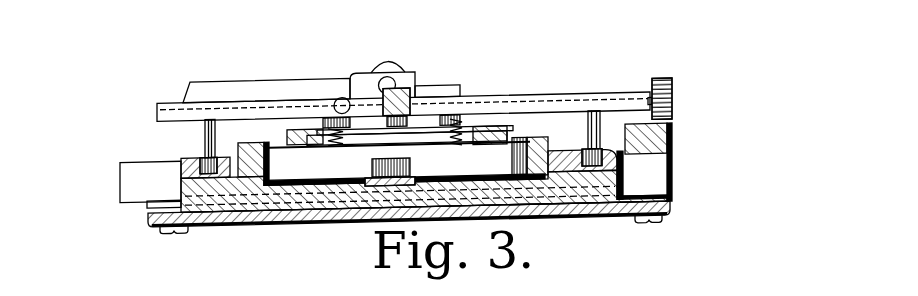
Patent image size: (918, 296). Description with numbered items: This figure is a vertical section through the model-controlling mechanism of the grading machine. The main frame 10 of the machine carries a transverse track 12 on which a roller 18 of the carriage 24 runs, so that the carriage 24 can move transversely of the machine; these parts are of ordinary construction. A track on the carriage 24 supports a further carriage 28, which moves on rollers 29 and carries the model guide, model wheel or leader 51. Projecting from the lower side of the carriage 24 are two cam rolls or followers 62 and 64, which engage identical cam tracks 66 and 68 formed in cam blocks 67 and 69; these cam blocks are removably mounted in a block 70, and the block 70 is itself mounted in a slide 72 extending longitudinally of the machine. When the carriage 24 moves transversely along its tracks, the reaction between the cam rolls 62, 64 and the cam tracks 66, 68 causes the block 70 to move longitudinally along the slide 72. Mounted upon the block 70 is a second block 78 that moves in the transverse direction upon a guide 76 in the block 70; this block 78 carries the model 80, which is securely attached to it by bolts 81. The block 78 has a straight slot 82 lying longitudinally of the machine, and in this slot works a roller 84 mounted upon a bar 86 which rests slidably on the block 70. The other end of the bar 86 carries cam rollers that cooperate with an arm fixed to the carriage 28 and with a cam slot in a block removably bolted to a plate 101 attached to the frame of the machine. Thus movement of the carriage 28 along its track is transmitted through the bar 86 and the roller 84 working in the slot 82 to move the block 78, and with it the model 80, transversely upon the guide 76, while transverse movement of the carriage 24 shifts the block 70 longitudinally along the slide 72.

The main frame 10 is at (132, 190).
The transverse track 12 is at (672, 142).
The roller 18 is at (673, 84).
The carriage 24 is at (570, 100).
The carriage 28 is at (257, 87).
The roller 29 is at (387, 65).
The model guide 51 is at (414, 117).
The cam roll 62 is at (183, 160).
The cam roll 64 is at (603, 147).
The cam track 66 is at (181, 166).
The cam block 67 is at (180, 171).
The cam track 68 is at (578, 145).
The cam block 69 is at (622, 165).
The block 70 is at (625, 178).
The slide 72 is at (147, 212).
The guide 76 is at (208, 220).
The block 78 is at (261, 176).
The model 80 is at (312, 130).
The bolt 81 is at (327, 123).
The slot 82 is at (312, 162).
The roller 84 is at (373, 162).
The bar 86 is at (498, 218).
The plate 101 is at (570, 218).